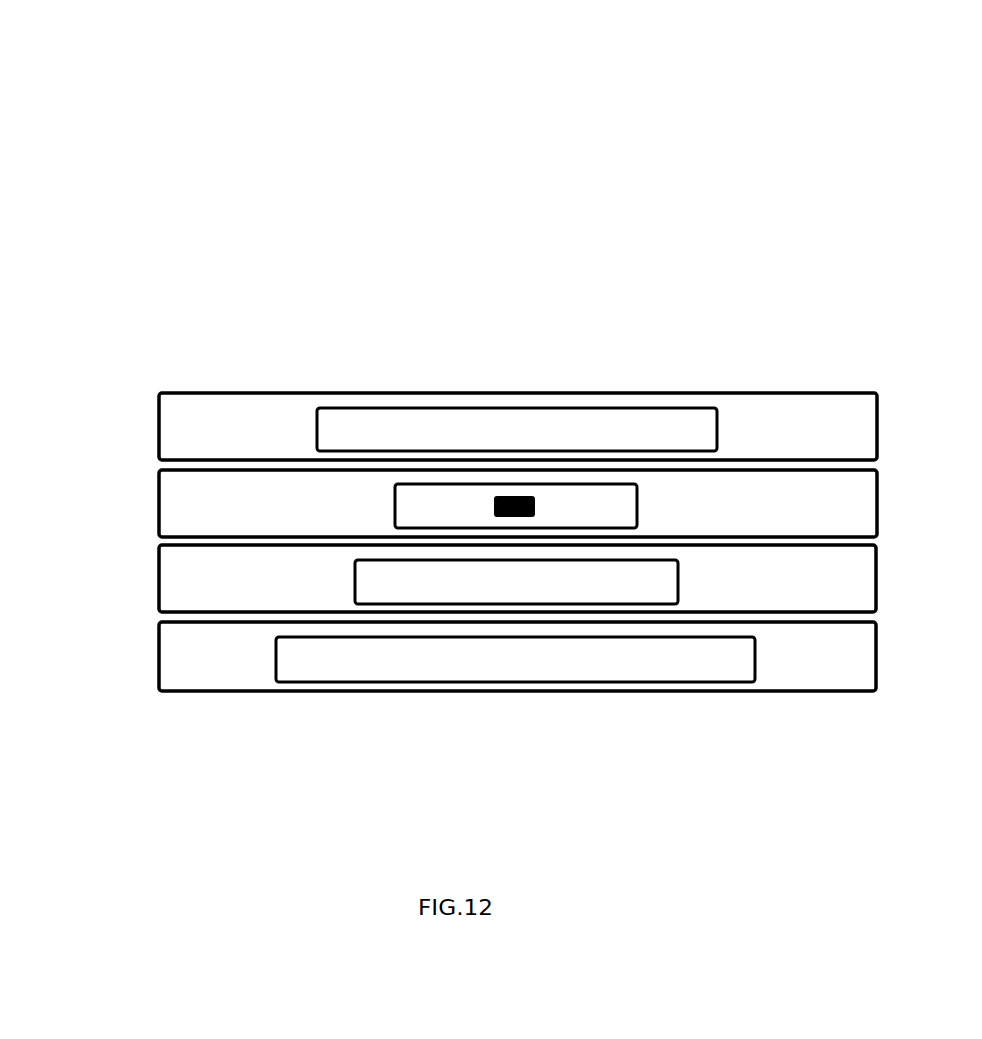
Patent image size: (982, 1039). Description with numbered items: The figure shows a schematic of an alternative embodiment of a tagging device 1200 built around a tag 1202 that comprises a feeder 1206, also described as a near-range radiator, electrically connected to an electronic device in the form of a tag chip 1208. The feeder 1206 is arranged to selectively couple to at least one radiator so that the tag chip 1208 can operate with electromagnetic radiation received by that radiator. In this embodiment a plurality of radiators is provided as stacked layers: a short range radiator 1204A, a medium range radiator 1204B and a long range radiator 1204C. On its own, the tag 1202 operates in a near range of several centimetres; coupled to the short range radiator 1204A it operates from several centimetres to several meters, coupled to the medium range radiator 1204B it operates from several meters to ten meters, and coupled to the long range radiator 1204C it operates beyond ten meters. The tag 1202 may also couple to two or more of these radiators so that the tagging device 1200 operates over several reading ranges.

The tagging device 1200 is at (731, 141).
The tag 1202 is at (518, 542).
The short range radiator 1204A is at (355, 582).
The medium range radiator 1204B is at (317, 427).
The long range radiator 1204C is at (276, 657).
The feeder 1206 is at (395, 505).
The tag chip 1208 is at (514, 497).